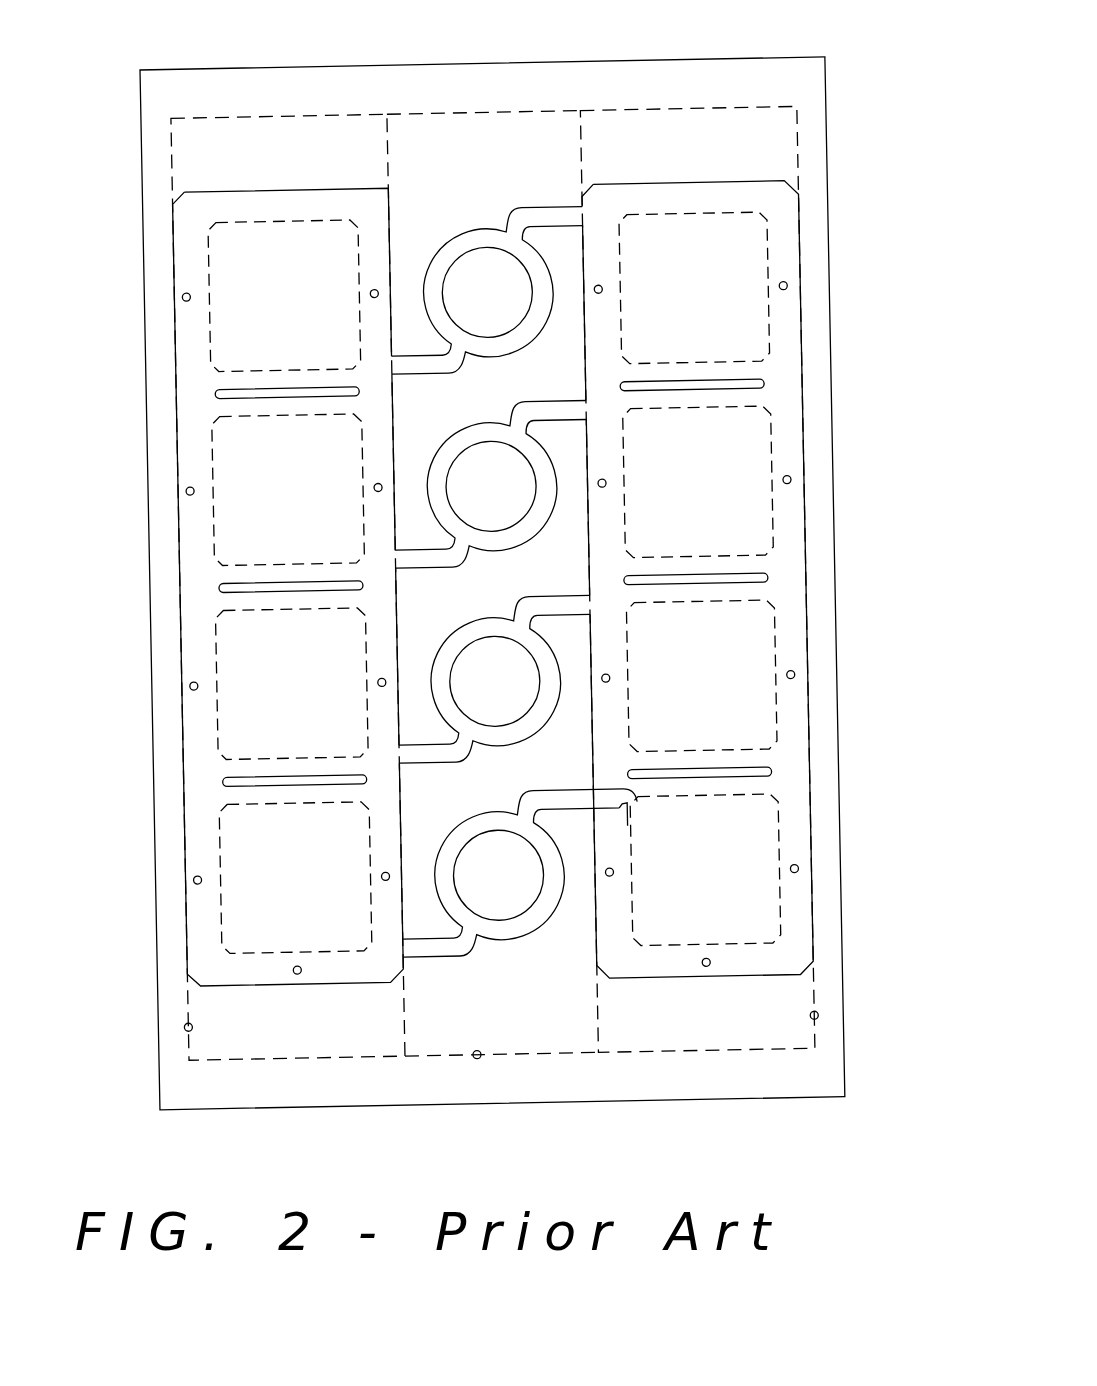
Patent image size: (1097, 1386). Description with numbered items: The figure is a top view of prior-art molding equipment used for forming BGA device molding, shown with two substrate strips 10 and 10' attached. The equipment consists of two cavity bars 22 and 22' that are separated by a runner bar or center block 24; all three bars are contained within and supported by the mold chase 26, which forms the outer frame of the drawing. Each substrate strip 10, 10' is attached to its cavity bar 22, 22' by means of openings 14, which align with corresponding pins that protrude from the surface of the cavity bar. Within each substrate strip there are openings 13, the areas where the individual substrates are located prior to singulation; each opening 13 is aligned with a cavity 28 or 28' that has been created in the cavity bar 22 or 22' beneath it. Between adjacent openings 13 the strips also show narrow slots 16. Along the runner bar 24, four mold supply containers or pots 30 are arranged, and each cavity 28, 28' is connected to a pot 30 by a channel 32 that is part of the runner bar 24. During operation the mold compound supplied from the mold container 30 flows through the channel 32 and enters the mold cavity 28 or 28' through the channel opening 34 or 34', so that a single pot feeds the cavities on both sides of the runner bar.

The substrate strip 10 is at (287, 506).
The substrate strip 10' is at (698, 498).
The opening 13 is at (207, 268).
The opening 14 is at (375, 289).
The slot 16 is at (213, 392).
The cavity bar 22 is at (247, 587).
The cavity bar 22' is at (740, 579).
The runner bar 24 is at (477, 1059).
The mold chase 26 is at (165, 997).
The cavity 28 is at (221, 587).
The cavity 28' is at (757, 530).
The mold supply container 30 is at (492, 895).
The channel 32 is at (443, 958).
The channel opening 34 is at (326, 1061).
The channel opening 34' is at (666, 1057).